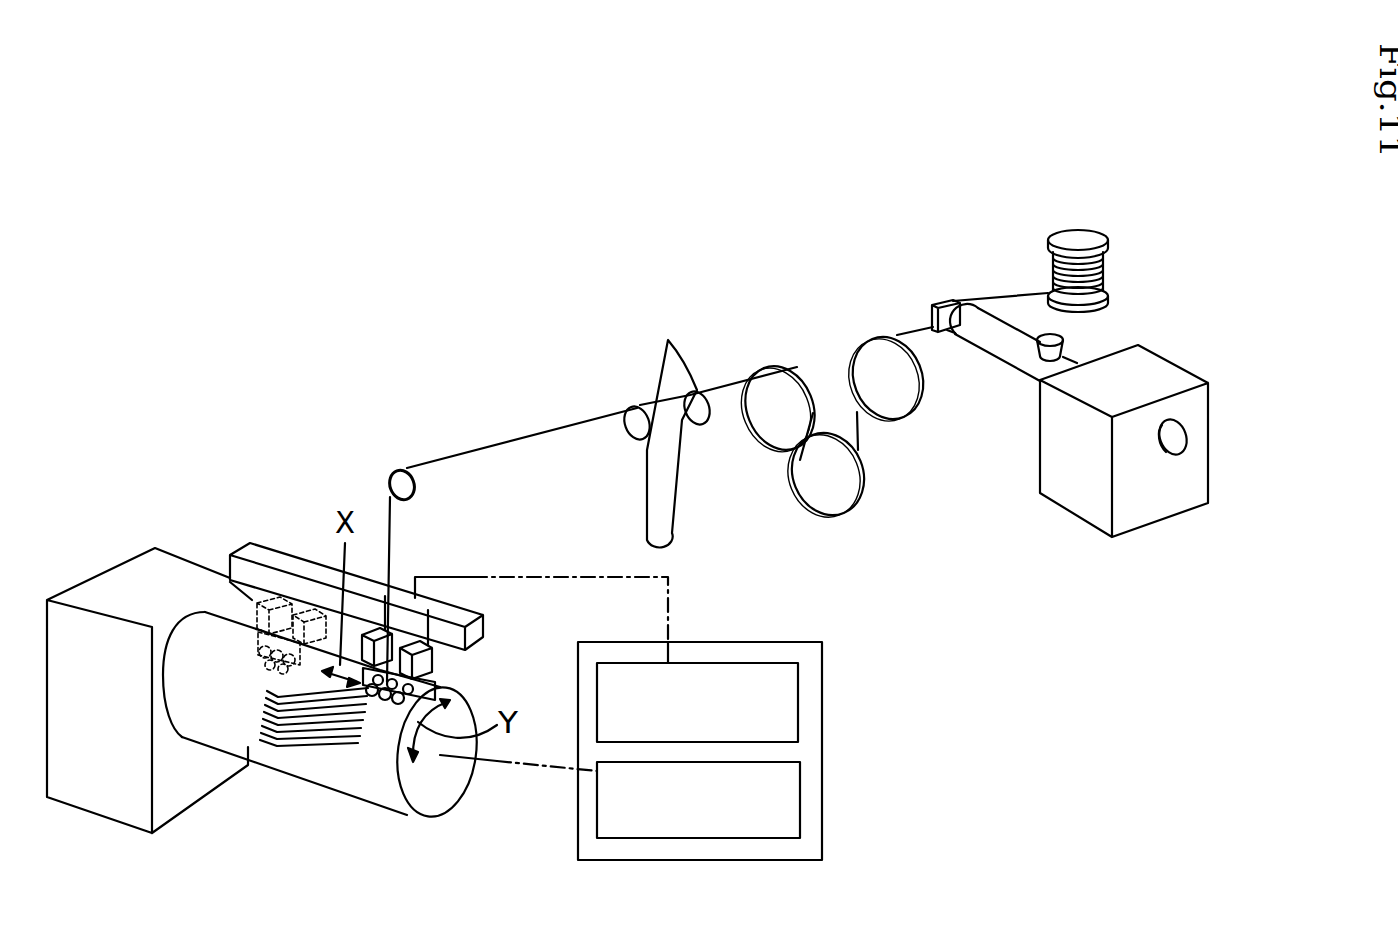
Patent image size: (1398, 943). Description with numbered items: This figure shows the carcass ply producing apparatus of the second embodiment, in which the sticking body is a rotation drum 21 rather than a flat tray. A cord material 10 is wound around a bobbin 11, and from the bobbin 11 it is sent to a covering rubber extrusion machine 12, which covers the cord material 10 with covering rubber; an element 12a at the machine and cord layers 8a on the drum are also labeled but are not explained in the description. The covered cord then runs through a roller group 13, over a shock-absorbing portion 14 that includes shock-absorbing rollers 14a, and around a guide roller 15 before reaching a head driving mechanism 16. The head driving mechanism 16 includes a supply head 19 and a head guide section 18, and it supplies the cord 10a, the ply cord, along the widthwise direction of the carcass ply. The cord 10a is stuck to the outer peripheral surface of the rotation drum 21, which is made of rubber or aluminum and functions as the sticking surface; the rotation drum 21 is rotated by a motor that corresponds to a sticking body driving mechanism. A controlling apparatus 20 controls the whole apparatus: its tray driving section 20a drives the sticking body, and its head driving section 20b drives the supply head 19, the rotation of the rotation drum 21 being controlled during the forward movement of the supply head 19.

The optical fiber layers wound on drum 8a is at (307, 747).
The cord material 10 is at (1015, 302).
The cord 10a is at (540, 432).
The bobbin 11 is at (1086, 230).
The covering rubber extrusion machine 12 is at (1170, 343).
The fiber outlet 12a is at (942, 305).
The roller group 13 is at (836, 340).
The shock-absorbing portion 14 is at (686, 504).
The shock-absorbing rollers 14a is at (668, 340).
The guide roller 15 is at (402, 468).
The head driving mechanism 16 is at (270, 520).
The head guide section 18 is at (308, 550).
The supply head 19 is at (436, 663).
The controlling apparatus 20 is at (747, 788).
The tray driving section 20a is at (800, 812).
The head driving section 20b is at (798, 705).
The rotation drum 21 is at (352, 778).